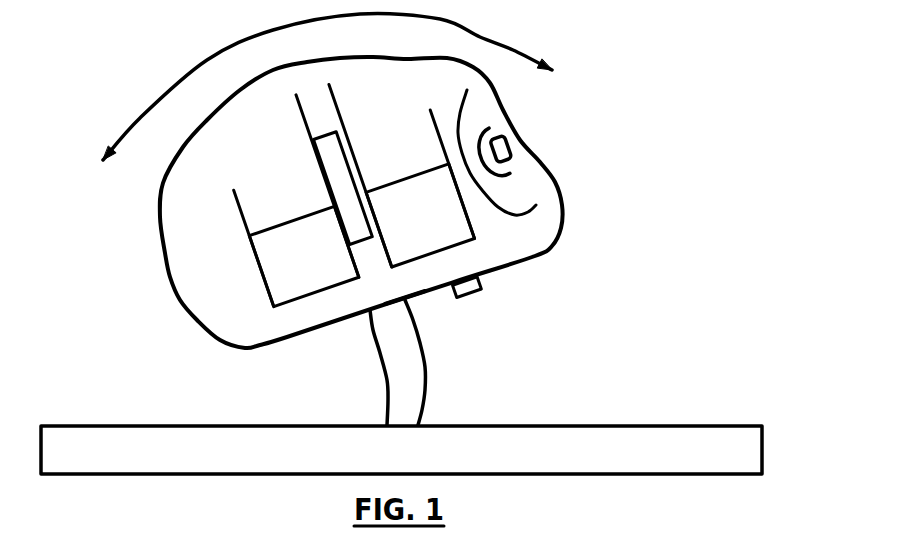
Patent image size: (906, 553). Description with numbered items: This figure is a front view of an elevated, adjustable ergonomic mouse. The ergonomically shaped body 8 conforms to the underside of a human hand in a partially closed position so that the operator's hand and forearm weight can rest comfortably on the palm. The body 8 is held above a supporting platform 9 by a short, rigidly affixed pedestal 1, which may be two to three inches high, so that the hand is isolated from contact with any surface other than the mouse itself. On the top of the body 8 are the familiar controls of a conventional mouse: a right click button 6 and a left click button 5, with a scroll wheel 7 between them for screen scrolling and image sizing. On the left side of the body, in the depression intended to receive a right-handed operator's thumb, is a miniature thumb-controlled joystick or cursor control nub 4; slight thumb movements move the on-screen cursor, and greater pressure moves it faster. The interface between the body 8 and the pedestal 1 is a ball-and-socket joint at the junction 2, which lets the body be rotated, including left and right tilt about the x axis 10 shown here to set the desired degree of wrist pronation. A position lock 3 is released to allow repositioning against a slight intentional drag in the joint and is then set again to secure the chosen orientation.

The pedestal 1 is at (387, 387).
The ball-and-socket joint junction 2 is at (407, 302).
The position lock 3 is at (485, 287).
The cursor control nub 4 is at (512, 150).
The left click button 5 is at (480, 228).
The right click button 6 is at (273, 305).
The scroll wheel 7 is at (313, 140).
The ergonomic mouse body 8 is at (168, 277).
The supporting platform 9 is at (762, 447).
The x axis of movement 10 is at (327, 86).